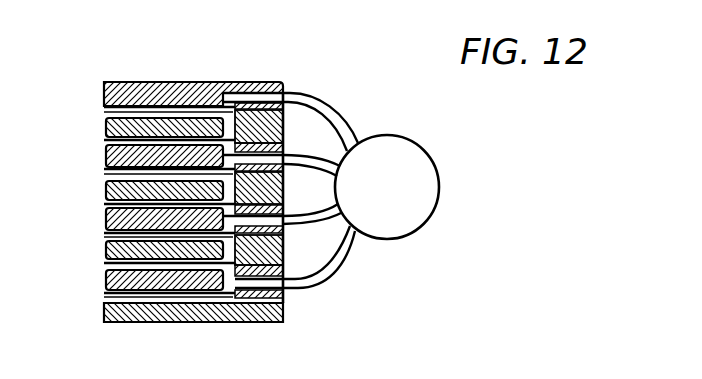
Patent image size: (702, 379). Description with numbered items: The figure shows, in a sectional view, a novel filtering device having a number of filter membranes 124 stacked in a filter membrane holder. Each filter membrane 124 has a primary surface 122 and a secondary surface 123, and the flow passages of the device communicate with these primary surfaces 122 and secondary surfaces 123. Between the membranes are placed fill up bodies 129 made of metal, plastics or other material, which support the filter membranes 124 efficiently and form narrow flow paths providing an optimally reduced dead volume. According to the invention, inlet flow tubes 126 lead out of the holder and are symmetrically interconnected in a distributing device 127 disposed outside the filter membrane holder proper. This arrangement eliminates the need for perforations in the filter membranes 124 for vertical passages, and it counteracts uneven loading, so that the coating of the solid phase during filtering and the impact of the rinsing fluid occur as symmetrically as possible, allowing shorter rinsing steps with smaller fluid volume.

The primary surfaces 122 is at (207, 107).
The secondary surfaces 123 is at (141, 107).
The filter membranes 124 is at (240, 93).
The inlet flow tubes 126 is at (339, 123).
The distributing device 127 is at (387, 187).
The fill up bodies 129 is at (111, 220).